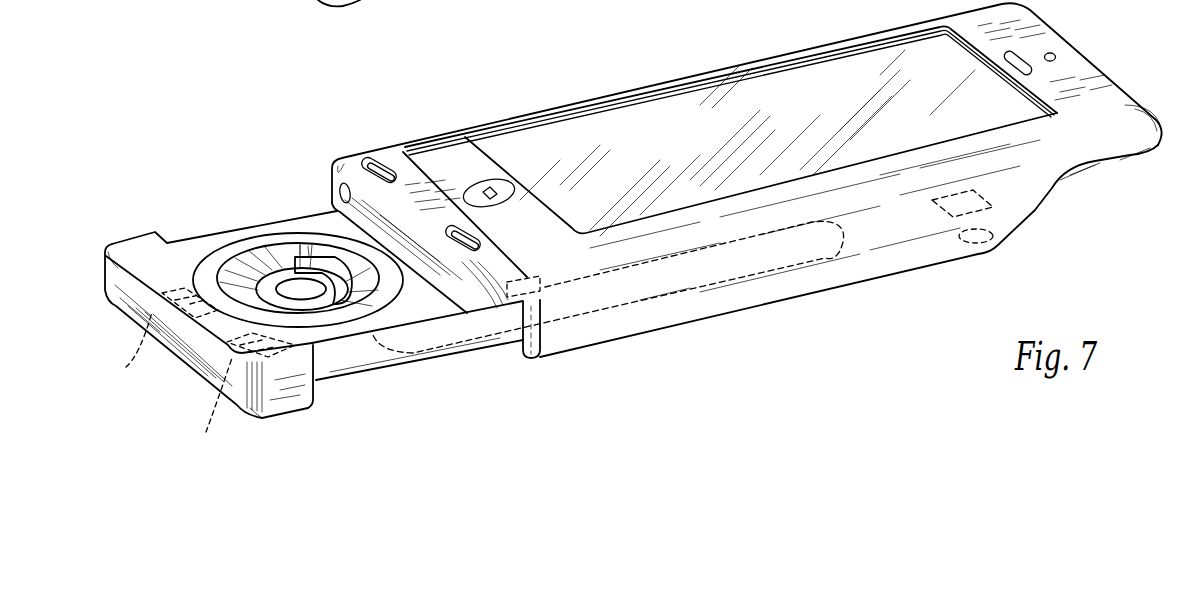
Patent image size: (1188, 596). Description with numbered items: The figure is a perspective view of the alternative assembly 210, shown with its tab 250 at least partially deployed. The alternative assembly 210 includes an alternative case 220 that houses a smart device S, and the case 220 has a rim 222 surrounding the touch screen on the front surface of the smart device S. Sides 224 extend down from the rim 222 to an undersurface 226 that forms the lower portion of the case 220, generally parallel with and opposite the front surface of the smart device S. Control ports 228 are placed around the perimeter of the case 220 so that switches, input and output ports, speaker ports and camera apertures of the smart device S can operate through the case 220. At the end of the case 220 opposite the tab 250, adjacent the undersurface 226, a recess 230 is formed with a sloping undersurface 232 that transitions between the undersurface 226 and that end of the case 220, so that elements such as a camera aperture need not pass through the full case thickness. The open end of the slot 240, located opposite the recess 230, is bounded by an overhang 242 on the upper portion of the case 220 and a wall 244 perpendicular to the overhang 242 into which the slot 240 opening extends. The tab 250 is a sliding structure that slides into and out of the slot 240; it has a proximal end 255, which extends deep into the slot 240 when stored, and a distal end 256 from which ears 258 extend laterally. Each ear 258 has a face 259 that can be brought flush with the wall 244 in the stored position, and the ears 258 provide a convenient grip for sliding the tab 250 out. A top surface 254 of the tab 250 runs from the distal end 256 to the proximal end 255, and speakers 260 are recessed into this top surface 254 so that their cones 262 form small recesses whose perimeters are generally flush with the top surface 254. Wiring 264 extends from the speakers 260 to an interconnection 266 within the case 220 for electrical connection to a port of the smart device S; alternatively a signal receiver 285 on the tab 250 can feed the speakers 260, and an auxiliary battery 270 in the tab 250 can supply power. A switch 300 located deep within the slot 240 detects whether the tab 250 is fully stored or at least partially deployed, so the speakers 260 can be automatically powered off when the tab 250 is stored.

The alternative assembly 210 is at (822, 405).
The alternative case 220 is at (331, 26).
The rim 222 is at (873, 167).
The sides 224 is at (907, 260).
The undersurface 226 is at (757, 312).
The control ports 228 is at (985, 198).
The recess 230 is at (1087, 190).
The sloping undersurface 232 is at (1082, 163).
The slot 240 is at (517, 338).
The overhang 242 is at (505, 320).
The wall 244 is at (537, 337).
The tab 250 is at (150, 203).
The top surface 254 is at (170, 274).
The proximal end 255 is at (313, 217).
The distal end 256 is at (197, 361).
The ears 258 is at (372, 0).
The face 259 is at (313, 378).
The speakers 260 is at (236, 253).
The cones 262 is at (257, 252).
The wiring 264 is at (677, 292).
The interconnection 266 is at (522, 280).
The auxiliary battery 270 is at (199, 434).
The signal receiver 285 is at (118, 367).
The switch 300 is at (995, 237).
The smart device S is at (690, 117).